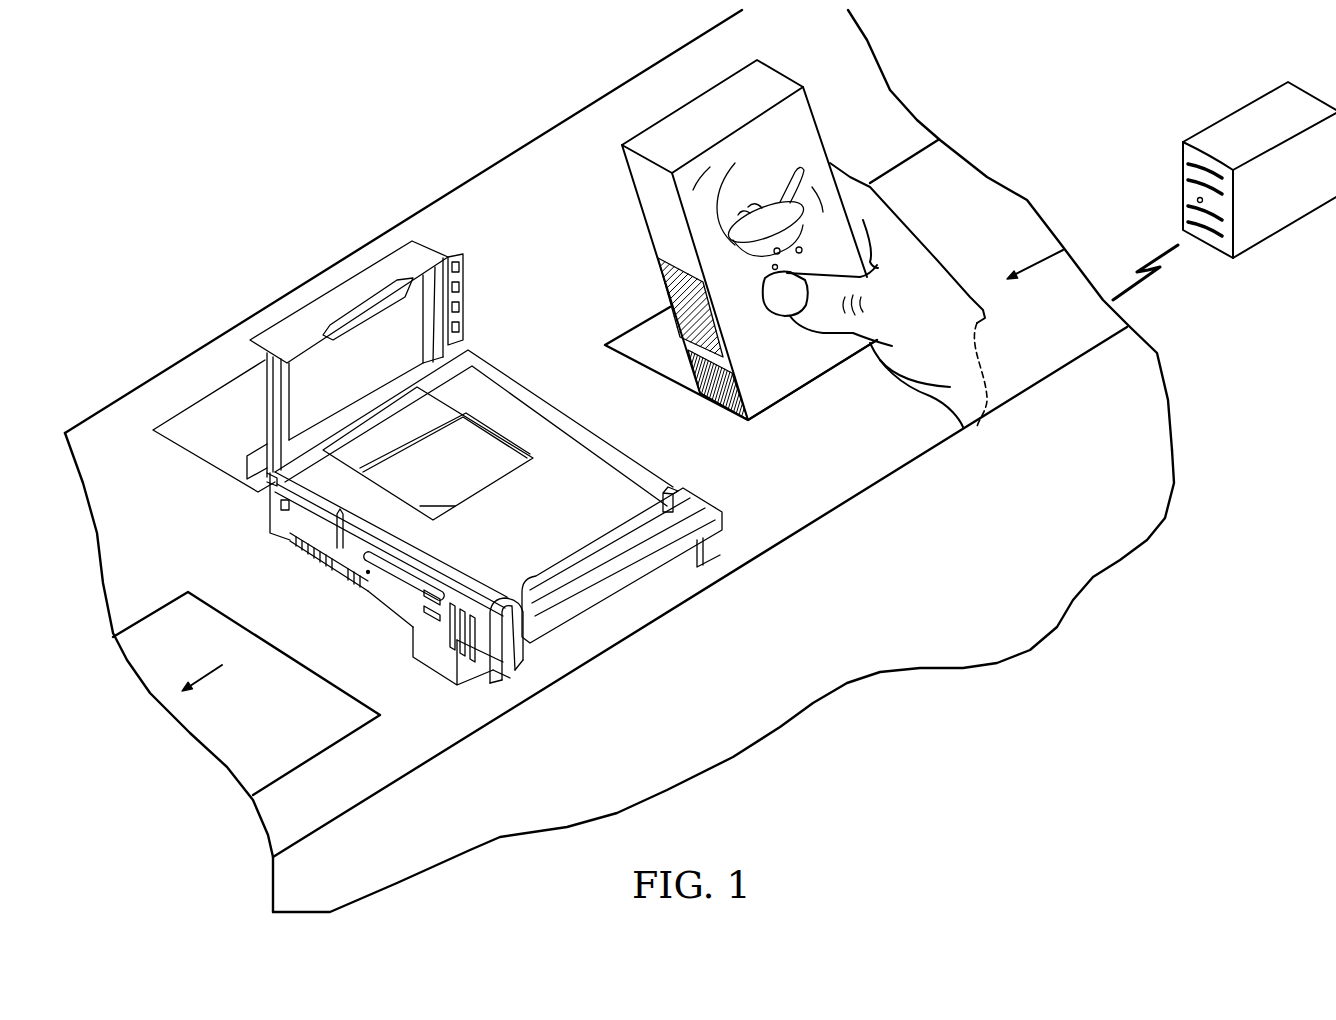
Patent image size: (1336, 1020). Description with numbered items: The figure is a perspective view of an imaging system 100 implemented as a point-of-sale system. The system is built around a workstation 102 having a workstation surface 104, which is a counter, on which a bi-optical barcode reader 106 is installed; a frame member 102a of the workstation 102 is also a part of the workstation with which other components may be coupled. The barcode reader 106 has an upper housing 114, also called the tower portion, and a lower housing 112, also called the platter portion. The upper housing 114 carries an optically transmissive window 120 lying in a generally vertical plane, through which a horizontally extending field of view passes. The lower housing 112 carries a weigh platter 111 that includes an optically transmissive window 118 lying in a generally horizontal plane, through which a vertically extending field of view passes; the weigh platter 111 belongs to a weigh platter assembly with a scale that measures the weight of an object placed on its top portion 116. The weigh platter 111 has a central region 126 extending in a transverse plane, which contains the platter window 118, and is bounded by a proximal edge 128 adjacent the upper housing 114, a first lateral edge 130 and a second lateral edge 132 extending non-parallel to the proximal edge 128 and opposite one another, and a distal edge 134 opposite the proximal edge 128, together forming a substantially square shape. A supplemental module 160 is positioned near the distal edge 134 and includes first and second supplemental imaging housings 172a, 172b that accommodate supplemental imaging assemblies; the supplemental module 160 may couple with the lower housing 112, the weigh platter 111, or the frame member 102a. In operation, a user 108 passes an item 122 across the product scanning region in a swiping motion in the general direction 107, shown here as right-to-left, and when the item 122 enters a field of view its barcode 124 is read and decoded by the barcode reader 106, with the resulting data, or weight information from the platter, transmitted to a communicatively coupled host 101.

The imaging system 100 is at (158, 342).
The host 101 is at (1183, 185).
The workstation 102 is at (437, 180).
The frame member 102a is at (500, 667).
The workstation surface 104 is at (873, 103).
The bi-optical barcode reader 106 is at (273, 400).
The general direction 107 is at (937, 234).
The user 108 is at (953, 300).
The weigh platter 111 is at (583, 470).
The lower housing 112 is at (420, 633).
The upper housing 114 is at (283, 340).
The top portion 116 is at (437, 573).
The optically transmissive window 118 is at (440, 512).
The optically transmissive window 120 is at (400, 340).
The item 122 is at (803, 155).
The barcode 124 is at (735, 380).
The central region 126 is at (580, 509).
The proximal edge 128 is at (327, 443).
The first lateral edge 130 is at (342, 517).
The second lateral edge 132 is at (647, 465).
The distal edge 134 is at (547, 617).
The supplemental module 160 is at (482, 645).
The first supplemental imaging housing 172a is at (490, 635).
The second supplemental imaging housing 172b is at (690, 490).